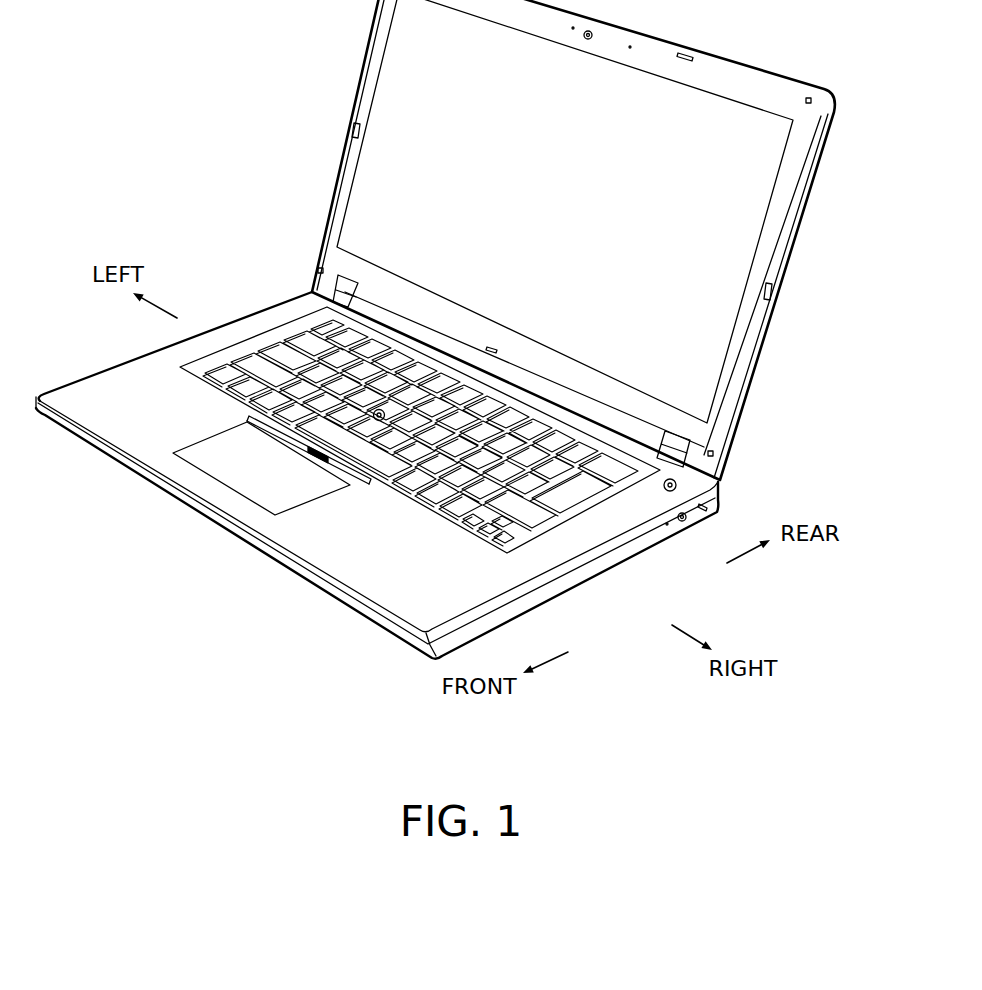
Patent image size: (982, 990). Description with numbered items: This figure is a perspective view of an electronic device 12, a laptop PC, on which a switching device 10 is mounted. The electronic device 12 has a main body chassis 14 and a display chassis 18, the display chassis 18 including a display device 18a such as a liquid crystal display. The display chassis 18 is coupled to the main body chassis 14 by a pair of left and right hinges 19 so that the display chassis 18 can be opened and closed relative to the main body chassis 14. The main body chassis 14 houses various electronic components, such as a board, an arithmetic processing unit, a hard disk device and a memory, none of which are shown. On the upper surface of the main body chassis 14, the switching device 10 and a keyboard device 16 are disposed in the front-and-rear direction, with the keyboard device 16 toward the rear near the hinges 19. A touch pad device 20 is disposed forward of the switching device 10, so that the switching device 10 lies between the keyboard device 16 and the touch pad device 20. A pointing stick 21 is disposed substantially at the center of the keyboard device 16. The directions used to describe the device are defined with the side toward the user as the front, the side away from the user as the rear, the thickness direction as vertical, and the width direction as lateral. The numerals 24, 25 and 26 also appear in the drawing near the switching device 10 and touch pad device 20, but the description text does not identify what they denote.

The switching device 10 is at (359, 482).
The electronic device 12 is at (192, 24).
The main body chassis 14 is at (107, 427).
The keyboard device 16 is at (266, 352).
The display chassis 18 is at (806, 210).
The display device 18a is at (733, 252).
The hinges 19 is at (313, 292).
The touch pad device 20 is at (212, 487).
The pointing stick 21 is at (384, 411).
The button unit 24 is at (255, 419).
The fingerprint sensor 25 is at (309, 447).
The click button 26 is at (344, 462).